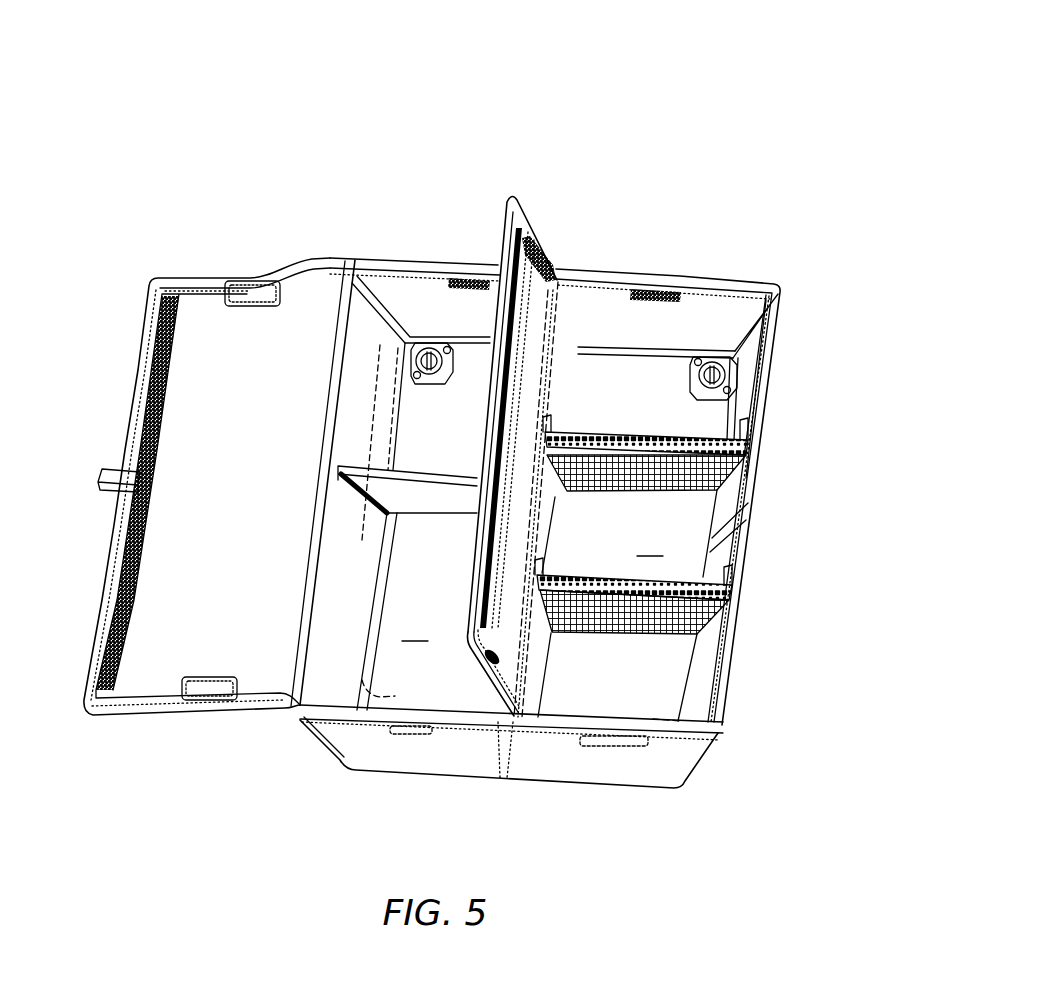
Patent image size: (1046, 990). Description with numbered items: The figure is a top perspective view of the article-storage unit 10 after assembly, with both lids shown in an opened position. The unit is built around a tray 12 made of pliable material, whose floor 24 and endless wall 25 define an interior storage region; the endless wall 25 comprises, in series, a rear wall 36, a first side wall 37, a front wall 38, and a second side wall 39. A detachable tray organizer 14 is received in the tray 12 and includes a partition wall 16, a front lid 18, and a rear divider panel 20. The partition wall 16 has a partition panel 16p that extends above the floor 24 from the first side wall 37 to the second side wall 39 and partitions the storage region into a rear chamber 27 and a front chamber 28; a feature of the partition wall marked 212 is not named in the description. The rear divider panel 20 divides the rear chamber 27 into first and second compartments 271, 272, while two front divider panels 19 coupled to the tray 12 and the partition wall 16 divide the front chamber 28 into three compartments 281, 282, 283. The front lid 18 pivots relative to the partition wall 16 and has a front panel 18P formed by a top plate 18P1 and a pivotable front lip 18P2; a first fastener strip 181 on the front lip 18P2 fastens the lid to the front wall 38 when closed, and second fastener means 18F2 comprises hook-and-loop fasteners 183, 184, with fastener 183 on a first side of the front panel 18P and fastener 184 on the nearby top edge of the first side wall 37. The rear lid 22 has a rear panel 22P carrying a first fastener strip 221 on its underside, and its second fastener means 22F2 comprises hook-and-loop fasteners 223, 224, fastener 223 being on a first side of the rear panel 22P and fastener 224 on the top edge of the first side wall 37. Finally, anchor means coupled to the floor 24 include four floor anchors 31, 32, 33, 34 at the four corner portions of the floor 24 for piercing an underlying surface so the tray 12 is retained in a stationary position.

The article-storage unit 10 is at (688, 103).
The tray 12 is at (652, 752).
The detachable tray organizer 14 is at (600, 178).
The partition wall 16 is at (568, 336).
The partition panel 16p is at (527, 702).
The front lid 18 is at (500, 222).
The second fastener means 18F2 is at (637, 200).
The front panel 18P is at (508, 566).
The top plate 18P1 is at (531, 362).
The front lip 18P2 is at (497, 305).
The first fastener strip 181 is at (488, 583).
The hook-and-loop fastener 183 is at (538, 258).
The hook-and-loop fastener 184 is at (660, 296).
The front divider panel 19 is at (584, 470).
The rear divider panel 20 is at (409, 464).
The partition wall 212 is at (523, 434).
The rear lid 22 is at (192, 268).
The second fastener means 22F2 is at (420, 197).
The rear panel 22P is at (150, 678).
The first fastener strip 221 is at (172, 368).
The hook-and-loop fastener 223 is at (249, 280).
The hook-and-loop fastener 224 is at (473, 272).
The floor 24 is at (532, 587).
The endless wall 25 is at (353, 741).
The rear chamber 27 is at (433, 672).
The first compartment 271 is at (375, 373).
The second compartment 272 is at (355, 552).
The front chamber 28 is at (606, 694).
The first compartment 281 is at (743, 313).
The second compartment 282 is at (688, 526).
The third compartment 283 is at (663, 673).
The first floor anchor 31 is at (448, 385).
The second floor anchor 32 is at (696, 401).
The third floor anchor 33 is at (662, 714).
The fourth floor anchor 34 is at (383, 684).
The rear wall 36 is at (346, 528).
The first side wall 37 is at (653, 310).
The front wall 38 is at (744, 393).
The second side wall 39 is at (396, 750).